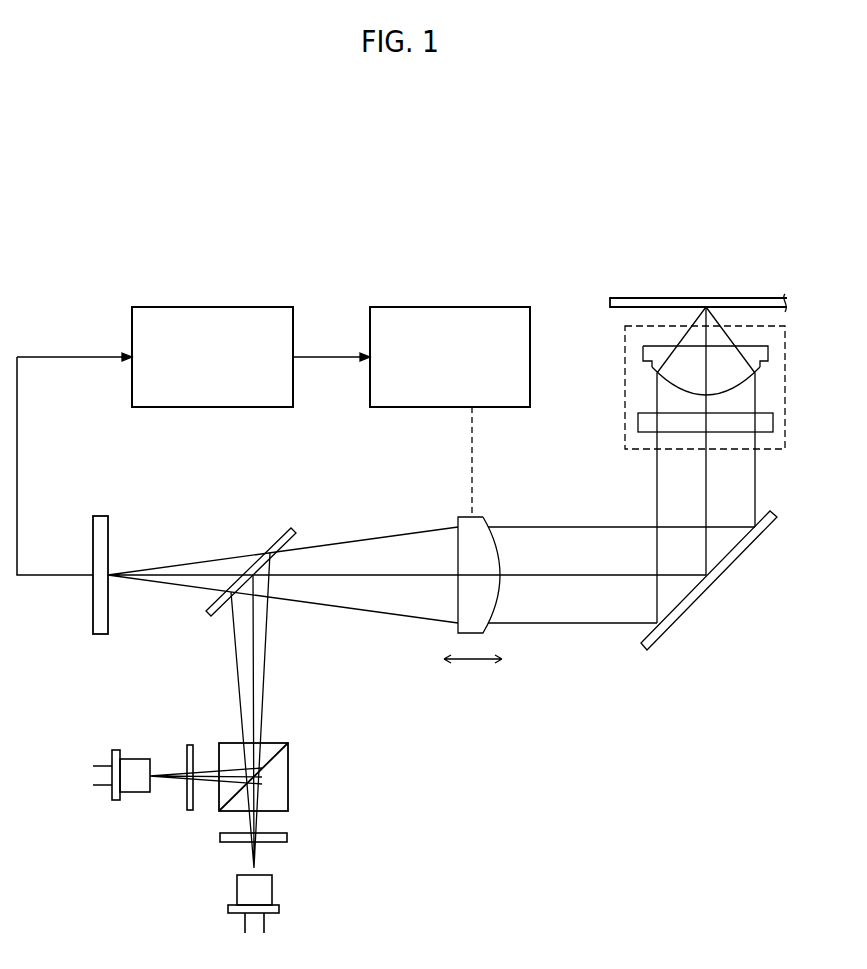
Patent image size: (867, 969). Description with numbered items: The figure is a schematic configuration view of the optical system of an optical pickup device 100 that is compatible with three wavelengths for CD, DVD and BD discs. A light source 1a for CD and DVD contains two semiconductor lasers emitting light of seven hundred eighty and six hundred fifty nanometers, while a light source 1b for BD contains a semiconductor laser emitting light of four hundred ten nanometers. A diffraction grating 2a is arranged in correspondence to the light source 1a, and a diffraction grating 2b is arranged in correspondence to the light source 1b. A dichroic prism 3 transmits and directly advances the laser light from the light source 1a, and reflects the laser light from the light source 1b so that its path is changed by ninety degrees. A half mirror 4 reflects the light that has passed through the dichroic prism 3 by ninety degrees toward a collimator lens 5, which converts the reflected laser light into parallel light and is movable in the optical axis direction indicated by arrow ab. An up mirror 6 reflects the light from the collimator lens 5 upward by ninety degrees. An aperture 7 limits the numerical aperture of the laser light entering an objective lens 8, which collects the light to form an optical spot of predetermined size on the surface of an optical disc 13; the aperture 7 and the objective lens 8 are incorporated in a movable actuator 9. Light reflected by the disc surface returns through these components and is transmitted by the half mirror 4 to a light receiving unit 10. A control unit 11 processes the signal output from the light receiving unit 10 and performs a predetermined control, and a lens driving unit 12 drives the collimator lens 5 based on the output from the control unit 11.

The optical pickup device 100 is at (561, 777).
The light source for CD and DVD 1a is at (272, 885).
The light source for BD 1b is at (135, 757).
The diffraction grating 2a is at (287, 838).
The diffraction grating 2b is at (190, 745).
The dichroic prism 3 is at (288, 778).
The half mirror 4 is at (286, 528).
The collimator lens 5 is at (484, 517).
The up mirror 6 is at (699, 600).
The aperture 7 is at (773, 425).
The objective lens 8 is at (768, 355).
The actuator 9 is at (625, 387).
The light receiving unit 10 is at (93, 550).
The control unit 11 is at (180, 307).
The lens driving unit 12 is at (440, 307).
The optical disc 13 is at (668, 298).